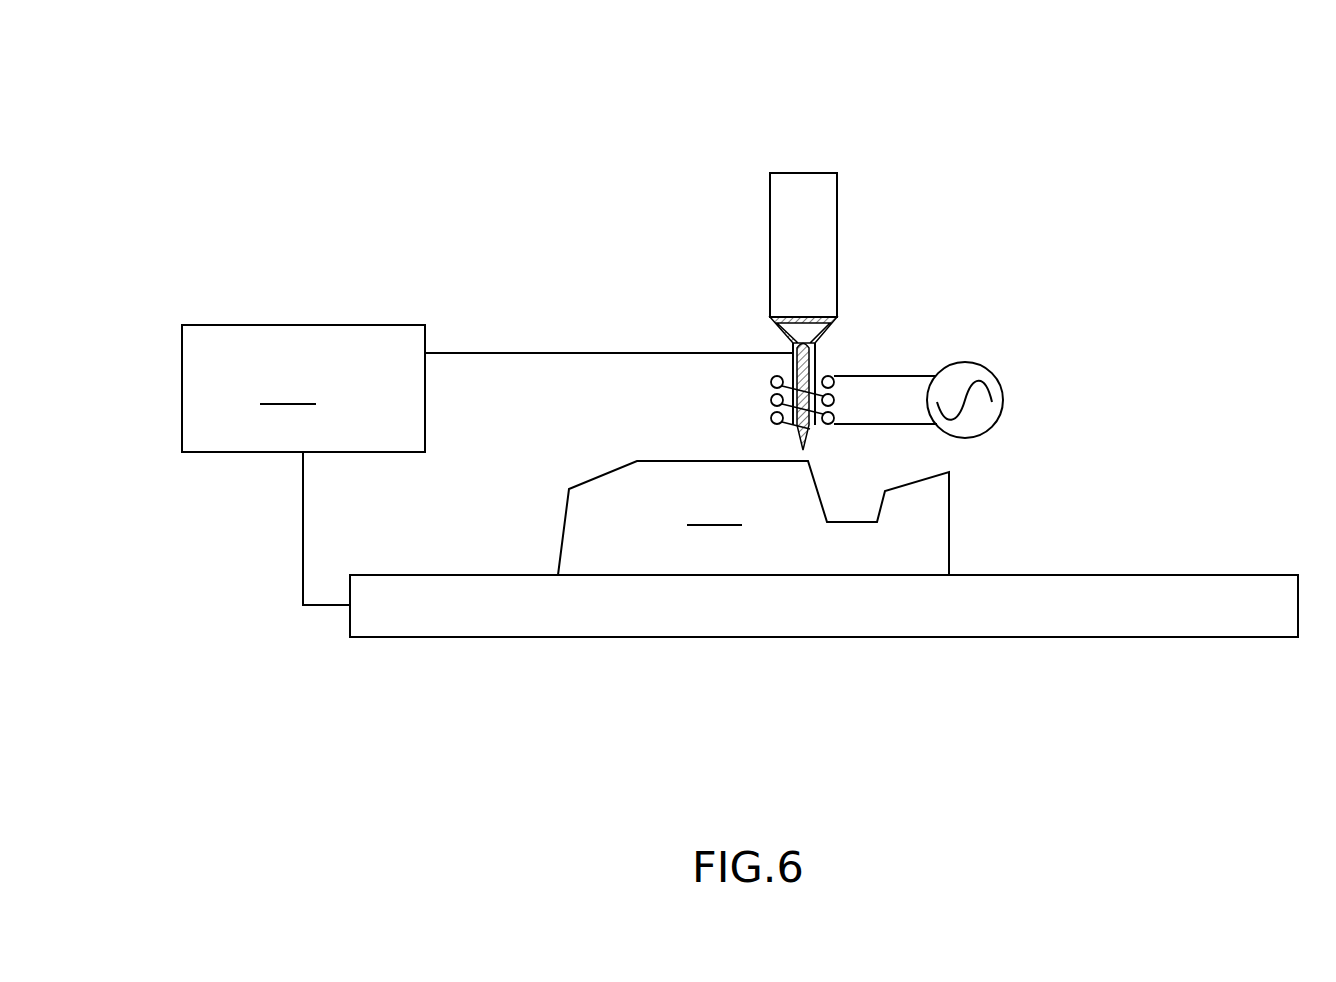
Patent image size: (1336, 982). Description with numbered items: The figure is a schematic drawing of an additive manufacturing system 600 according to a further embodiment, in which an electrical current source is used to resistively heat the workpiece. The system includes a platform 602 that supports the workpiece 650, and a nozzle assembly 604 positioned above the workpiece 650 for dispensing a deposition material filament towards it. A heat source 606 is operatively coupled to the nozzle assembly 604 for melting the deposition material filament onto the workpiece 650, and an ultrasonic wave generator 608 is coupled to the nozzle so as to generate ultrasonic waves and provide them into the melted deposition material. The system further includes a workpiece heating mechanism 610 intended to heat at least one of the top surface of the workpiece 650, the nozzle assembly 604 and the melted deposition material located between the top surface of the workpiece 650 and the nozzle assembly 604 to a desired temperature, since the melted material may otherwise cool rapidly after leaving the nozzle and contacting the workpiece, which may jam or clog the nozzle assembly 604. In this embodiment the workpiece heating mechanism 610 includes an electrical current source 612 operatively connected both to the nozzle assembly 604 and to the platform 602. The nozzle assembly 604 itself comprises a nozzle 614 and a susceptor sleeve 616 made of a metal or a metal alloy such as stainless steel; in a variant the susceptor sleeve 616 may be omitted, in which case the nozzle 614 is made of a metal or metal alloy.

The additive manufacturing system 600 is at (445, 138).
The platform 602 is at (1062, 638).
The nozzle assembly 604 is at (821, 346).
The heat source 606 is at (1003, 372).
The ultrasonic wave generator 608 is at (735, 212).
The workpiece heating mechanism 610 is at (270, 602).
The electrical current source 612 is at (487, 388).
The nozzle 614 is at (800, 366).
The susceptor sleeve 616 is at (783, 412).
The workpiece 650 is at (753, 518).